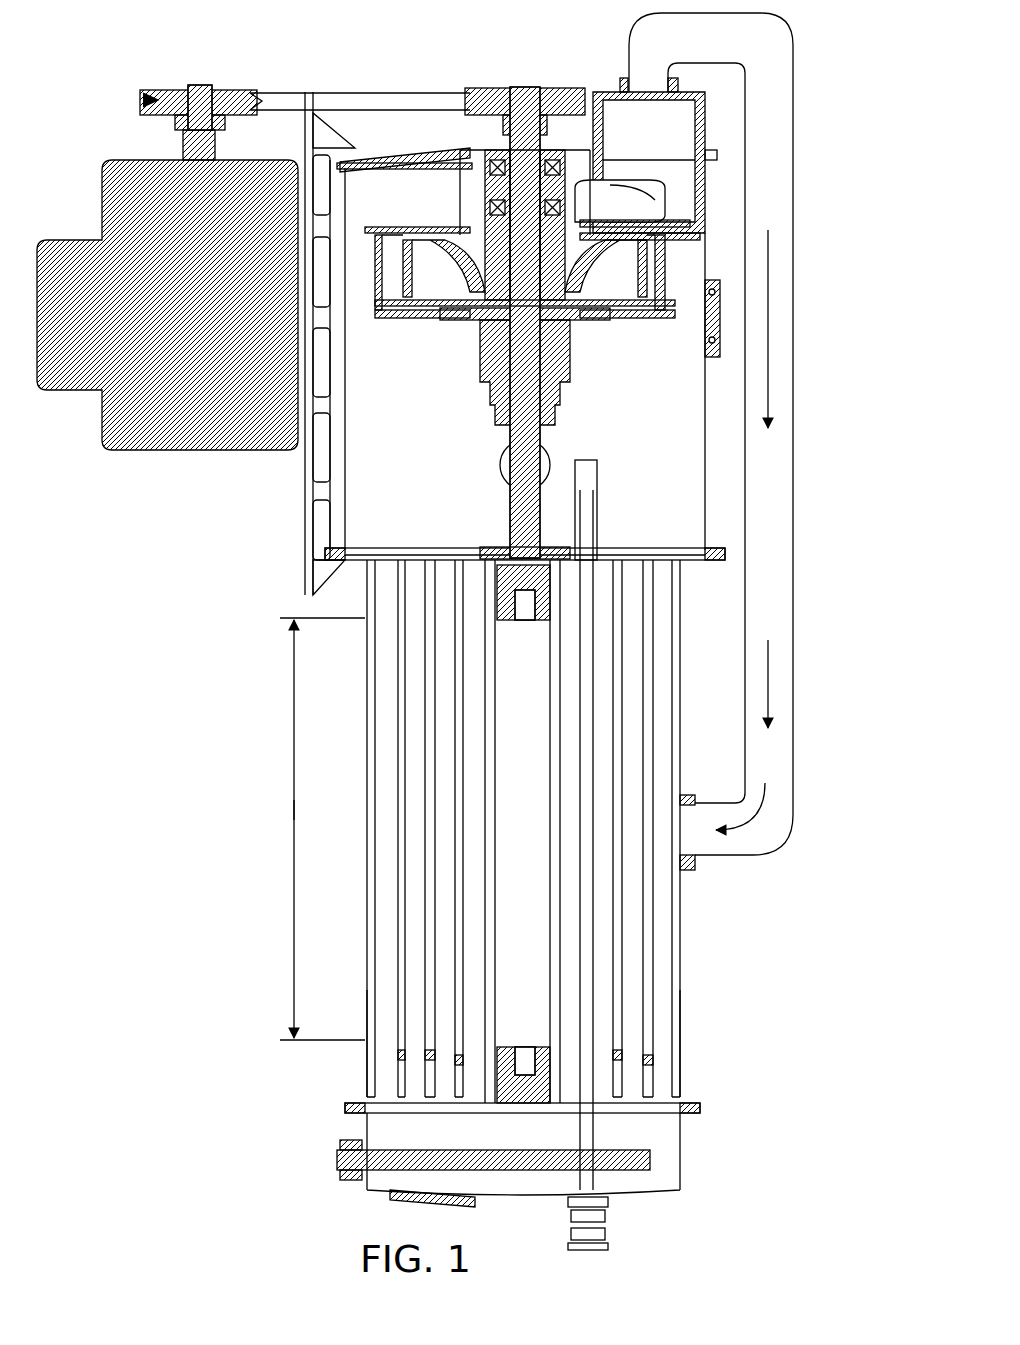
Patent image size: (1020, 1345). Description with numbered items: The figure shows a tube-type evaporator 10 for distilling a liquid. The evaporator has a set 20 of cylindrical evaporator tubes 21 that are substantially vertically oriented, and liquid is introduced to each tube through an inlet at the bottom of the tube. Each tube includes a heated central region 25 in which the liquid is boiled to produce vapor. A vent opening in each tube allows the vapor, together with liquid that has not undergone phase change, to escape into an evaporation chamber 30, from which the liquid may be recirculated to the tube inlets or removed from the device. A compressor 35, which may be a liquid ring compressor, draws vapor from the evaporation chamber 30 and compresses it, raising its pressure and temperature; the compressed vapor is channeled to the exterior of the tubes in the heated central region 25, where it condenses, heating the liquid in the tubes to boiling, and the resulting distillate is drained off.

The evaporator 10 is at (198, 763).
The set of cylindrical evaporator tubes 20 is at (475, 738).
The cylindrical evaporator tube 21 is at (462, 1028).
The heated central region 25 is at (292, 790).
The evaporation chamber 30 is at (360, 460).
The compressor 35 is at (410, 228).